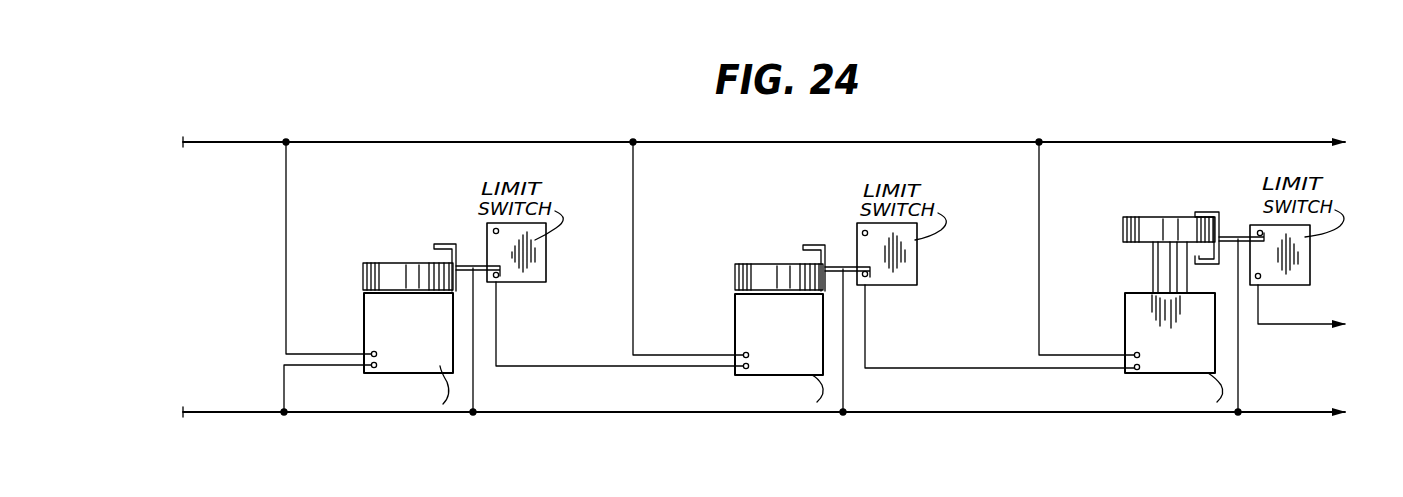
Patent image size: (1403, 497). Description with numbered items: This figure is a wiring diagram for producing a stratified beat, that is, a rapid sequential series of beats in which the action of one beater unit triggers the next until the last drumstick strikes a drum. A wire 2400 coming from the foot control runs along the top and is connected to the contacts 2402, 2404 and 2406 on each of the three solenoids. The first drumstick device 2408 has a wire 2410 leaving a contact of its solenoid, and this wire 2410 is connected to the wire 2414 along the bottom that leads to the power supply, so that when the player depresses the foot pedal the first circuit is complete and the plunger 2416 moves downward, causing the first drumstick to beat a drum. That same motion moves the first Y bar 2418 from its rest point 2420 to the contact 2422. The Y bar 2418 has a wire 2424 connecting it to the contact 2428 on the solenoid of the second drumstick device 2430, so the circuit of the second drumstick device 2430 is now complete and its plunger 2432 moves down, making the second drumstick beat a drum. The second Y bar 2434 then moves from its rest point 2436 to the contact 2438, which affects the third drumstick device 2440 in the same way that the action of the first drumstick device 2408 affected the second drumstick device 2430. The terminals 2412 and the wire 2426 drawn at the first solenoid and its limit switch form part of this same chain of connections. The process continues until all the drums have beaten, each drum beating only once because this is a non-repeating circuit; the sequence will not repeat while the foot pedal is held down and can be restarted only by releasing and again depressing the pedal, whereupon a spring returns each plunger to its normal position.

The wire 2400 is at (238, 142).
The contact 2402 is at (375, 351).
The contact 2404 is at (777, 347).
The contact 2406 is at (1140, 353).
The first drumstick device 2408 is at (360, 321).
The wire 2410 is at (285, 374).
The solenoid terminal 2412 is at (378, 365).
The wire 2414 is at (205, 413).
The plunger 2416 is at (391, 267).
The first Y bar 2418 is at (456, 257).
The rest point 2420 is at (494, 229).
The contact 2422 is at (497, 278).
The wire 2424 is at (473, 385).
The wire 2426 is at (496, 332).
The contact 2428 is at (749, 366).
The second drumstick device 2430 is at (736, 318).
The plunger 2432 is at (753, 267).
The second Y bar 2434 is at (816, 255).
The rest point 2436 is at (863, 231).
The contact 2438 is at (866, 277).
The third drumstick device 2440 is at (1123, 335).